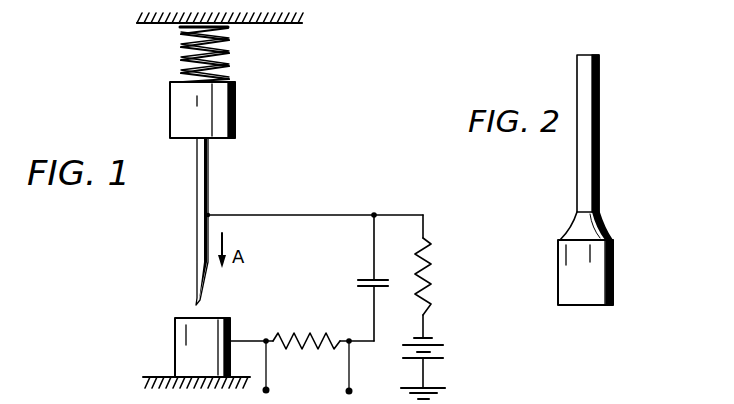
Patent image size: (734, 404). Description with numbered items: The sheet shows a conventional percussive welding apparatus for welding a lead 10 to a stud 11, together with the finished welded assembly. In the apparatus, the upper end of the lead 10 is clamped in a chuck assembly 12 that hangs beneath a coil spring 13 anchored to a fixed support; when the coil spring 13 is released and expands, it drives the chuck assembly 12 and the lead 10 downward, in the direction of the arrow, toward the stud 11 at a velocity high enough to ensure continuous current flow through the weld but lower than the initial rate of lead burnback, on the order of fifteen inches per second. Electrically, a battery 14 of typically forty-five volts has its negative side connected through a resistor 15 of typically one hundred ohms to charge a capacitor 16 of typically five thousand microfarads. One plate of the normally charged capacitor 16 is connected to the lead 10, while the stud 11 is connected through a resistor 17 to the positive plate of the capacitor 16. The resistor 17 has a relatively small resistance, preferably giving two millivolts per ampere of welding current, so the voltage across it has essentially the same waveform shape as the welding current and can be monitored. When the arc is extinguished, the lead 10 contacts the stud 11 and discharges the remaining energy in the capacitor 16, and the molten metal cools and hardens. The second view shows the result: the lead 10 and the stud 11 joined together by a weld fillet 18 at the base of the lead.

In FIG. 1, the lead 10 is at (196, 248).
In FIG. 2, the lead 10 is at (600, 128).
In FIG. 1, the stud 11 is at (175, 345).
In FIG. 2, the stud 11 is at (614, 270).
In FIG. 1, the chuck assembly 12 is at (236, 105).
In FIG. 1, the coil spring 13 is at (229, 57).
In FIG. 1, the battery 14 is at (433, 360).
In FIG. 1, the resistor 15 is at (431, 265).
In FIG. 1, the capacitor 16 is at (371, 278).
In FIG. 1, the resistor 17 is at (301, 335).
In FIG. 2, the weld fillet 18 is at (598, 225).